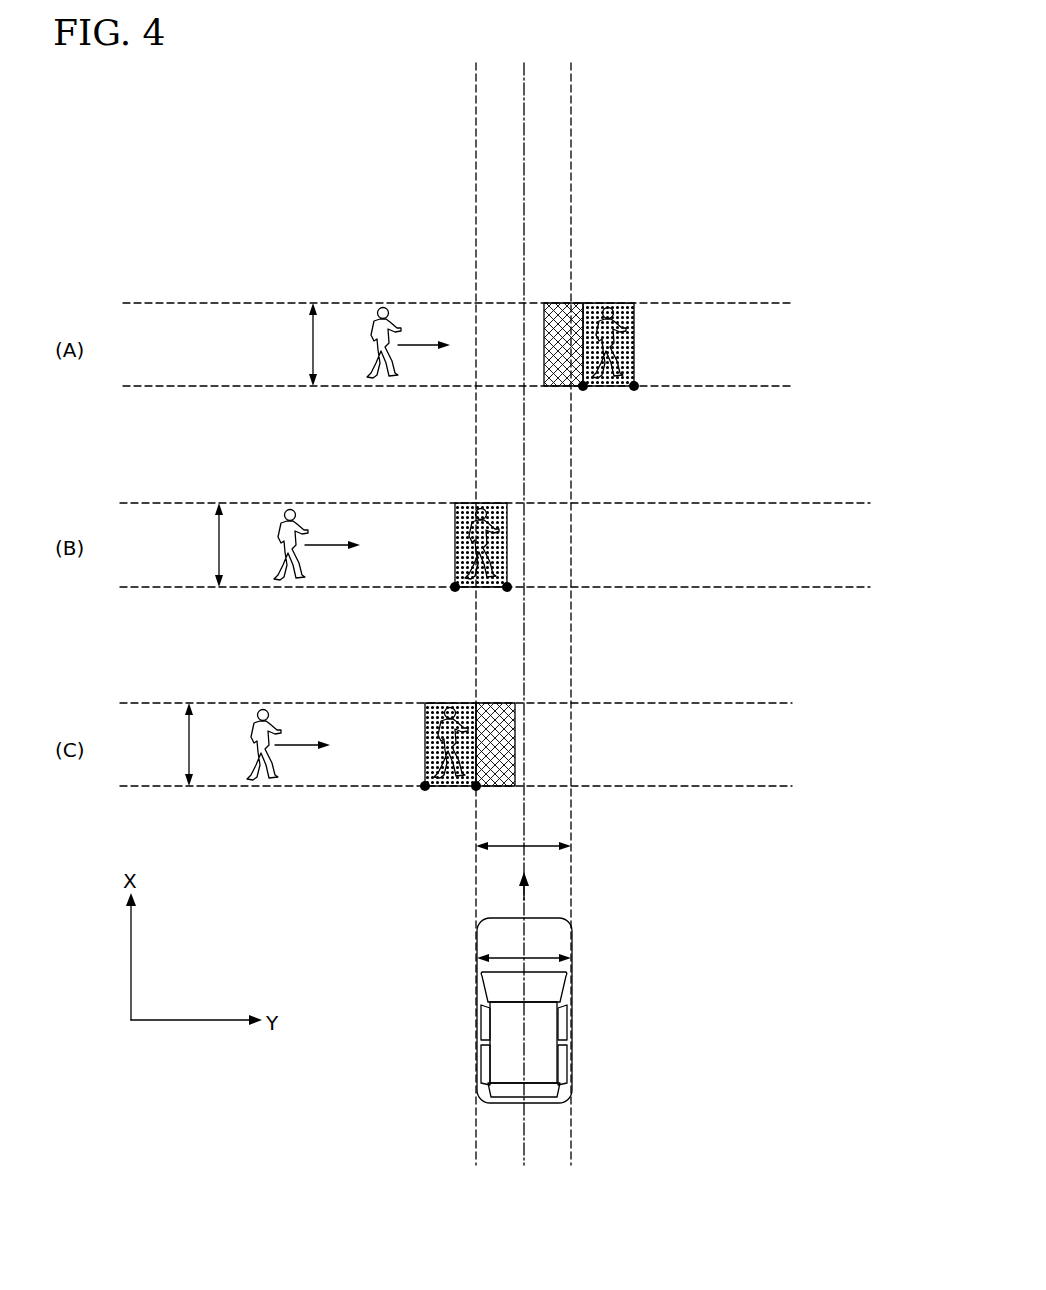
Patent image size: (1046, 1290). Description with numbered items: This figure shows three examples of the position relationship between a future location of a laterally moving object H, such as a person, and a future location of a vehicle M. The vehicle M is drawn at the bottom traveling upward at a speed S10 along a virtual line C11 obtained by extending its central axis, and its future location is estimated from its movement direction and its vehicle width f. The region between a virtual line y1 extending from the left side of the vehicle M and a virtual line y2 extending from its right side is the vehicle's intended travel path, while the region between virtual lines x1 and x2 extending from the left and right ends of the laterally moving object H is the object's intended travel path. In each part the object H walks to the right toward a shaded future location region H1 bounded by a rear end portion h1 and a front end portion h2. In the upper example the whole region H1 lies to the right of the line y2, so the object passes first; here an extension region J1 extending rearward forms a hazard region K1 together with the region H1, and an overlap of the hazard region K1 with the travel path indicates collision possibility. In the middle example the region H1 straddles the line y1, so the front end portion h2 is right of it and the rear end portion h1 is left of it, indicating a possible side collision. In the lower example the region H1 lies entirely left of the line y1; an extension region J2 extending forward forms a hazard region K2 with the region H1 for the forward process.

The virtual line y1 is at (476, 97).
The virtual line y2 is at (571, 97).
The virtual line C11 is at (524, 155).
The virtual line x1 is at (757, 302).
The virtual line x2 is at (757, 388).
The laterally moving object H is at (384, 303).
The future location region H1 is at (622, 302).
The extension region J1 is at (570, 302).
The extension region J2 is at (496, 702).
The hazard region K1 is at (687, 248).
The hazard region K2 is at (520, 646).
The rear end portion h1 is at (590, 396).
The front end portion h2 is at (642, 396).
The speed S10 is at (524, 898).
The vehicle width f is at (535, 957).
The vehicle M is at (572, 1040).